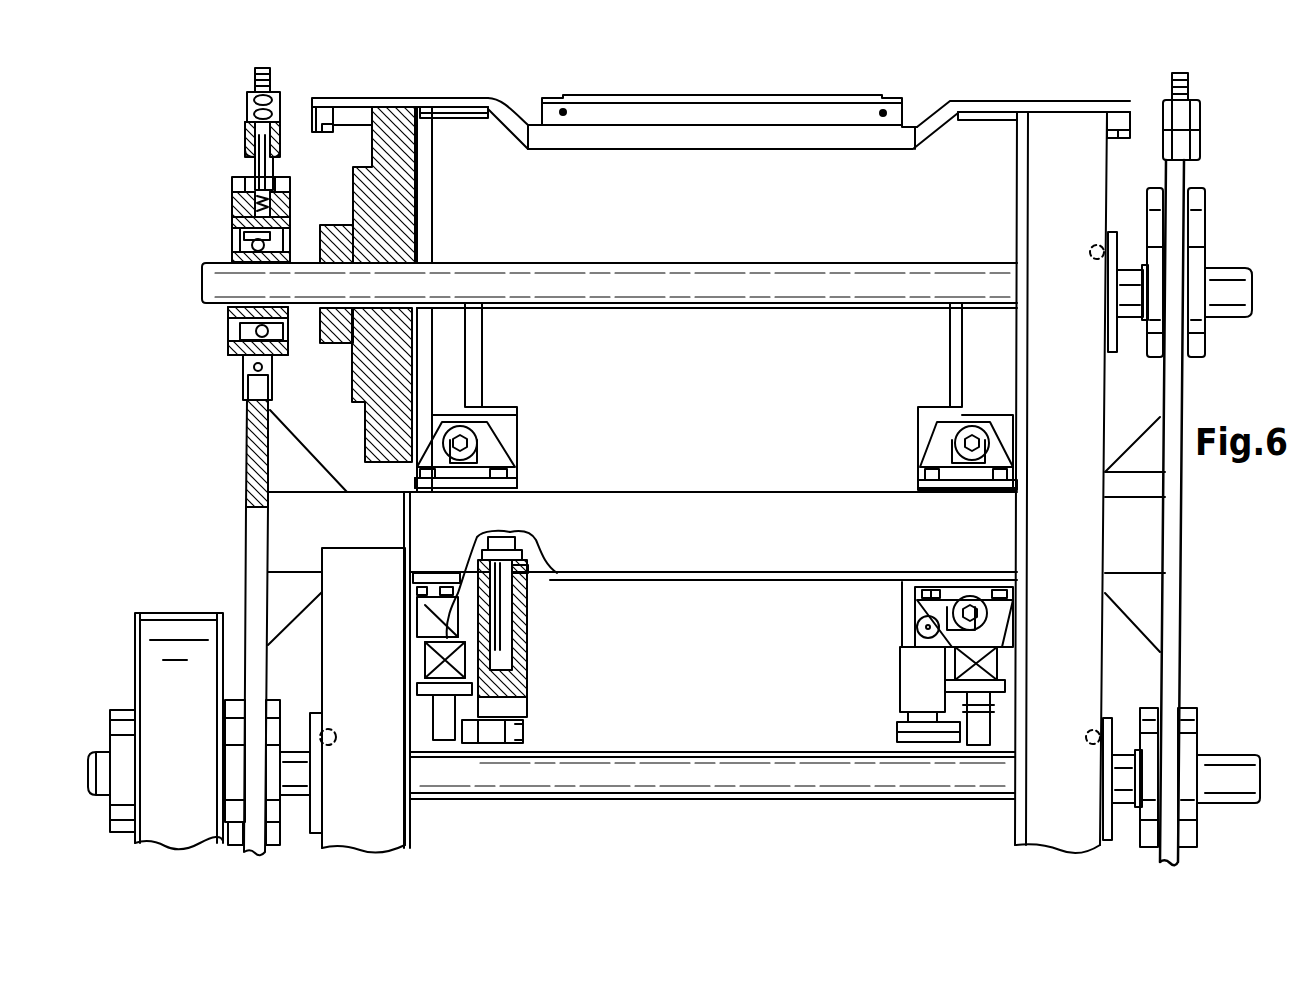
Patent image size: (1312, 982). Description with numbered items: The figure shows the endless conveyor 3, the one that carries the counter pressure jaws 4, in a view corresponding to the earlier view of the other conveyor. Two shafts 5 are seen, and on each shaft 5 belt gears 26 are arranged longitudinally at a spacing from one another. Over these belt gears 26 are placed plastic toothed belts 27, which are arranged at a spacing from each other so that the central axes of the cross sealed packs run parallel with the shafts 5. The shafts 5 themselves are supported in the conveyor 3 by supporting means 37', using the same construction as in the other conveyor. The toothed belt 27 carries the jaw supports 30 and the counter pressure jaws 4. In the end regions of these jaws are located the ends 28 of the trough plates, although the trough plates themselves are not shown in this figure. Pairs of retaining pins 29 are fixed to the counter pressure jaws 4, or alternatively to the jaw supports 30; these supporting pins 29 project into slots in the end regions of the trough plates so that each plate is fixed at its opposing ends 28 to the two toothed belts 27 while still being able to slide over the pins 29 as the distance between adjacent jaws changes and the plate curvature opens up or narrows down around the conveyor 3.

The endless conveyor 3 is at (398, 92).
The counter pressure jaws 4 is at (718, 117).
The shaft 5 is at (748, 303).
The belt gear 26 is at (378, 375).
The plastic toothed belt 27 is at (1082, 396).
The ends of the trough plates 28 is at (540, 110).
The retaining pins 29 is at (563, 112).
The jaw supports 30 is at (755, 143).
The supporting means 37' is at (708, 512).